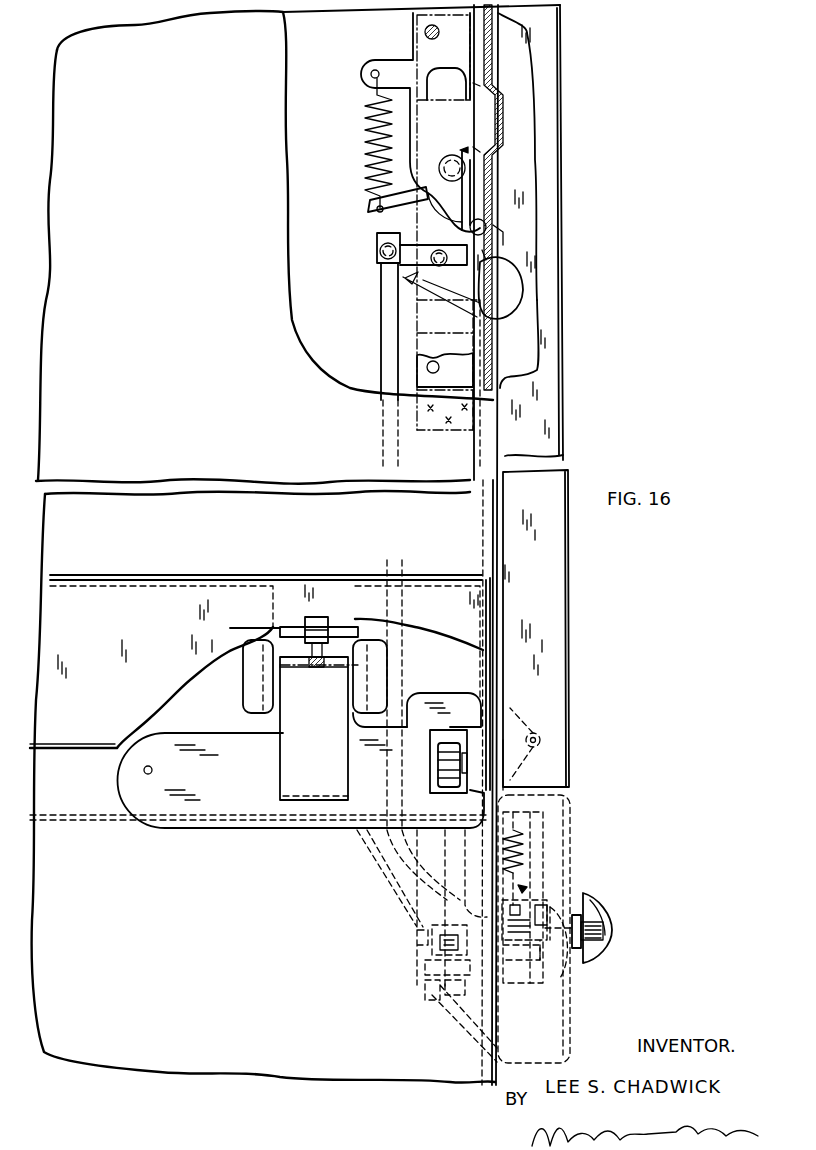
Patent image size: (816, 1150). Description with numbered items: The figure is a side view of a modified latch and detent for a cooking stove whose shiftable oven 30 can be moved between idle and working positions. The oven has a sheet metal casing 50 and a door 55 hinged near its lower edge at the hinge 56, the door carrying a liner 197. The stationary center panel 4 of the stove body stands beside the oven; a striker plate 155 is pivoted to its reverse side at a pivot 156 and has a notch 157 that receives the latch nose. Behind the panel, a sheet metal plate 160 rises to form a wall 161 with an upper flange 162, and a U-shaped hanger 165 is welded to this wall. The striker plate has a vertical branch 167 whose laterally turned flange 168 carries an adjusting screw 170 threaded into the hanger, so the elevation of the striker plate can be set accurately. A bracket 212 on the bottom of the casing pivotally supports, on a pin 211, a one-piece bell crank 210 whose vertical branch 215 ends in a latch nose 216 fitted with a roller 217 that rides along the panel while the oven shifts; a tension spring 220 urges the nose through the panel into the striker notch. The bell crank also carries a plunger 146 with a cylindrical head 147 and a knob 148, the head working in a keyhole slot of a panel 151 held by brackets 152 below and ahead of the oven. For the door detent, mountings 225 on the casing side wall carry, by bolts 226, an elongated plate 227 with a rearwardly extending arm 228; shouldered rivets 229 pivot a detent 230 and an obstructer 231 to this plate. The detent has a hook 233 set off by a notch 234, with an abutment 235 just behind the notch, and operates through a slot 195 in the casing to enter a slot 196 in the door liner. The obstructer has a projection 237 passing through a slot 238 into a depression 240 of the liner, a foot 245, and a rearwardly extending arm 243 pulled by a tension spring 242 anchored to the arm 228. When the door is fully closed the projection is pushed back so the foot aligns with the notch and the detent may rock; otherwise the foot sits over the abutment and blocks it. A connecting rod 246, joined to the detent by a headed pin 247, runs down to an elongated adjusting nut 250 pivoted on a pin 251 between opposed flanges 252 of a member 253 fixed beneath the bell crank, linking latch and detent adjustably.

The intermediate or center panel 4 is at (283, 590).
The shiftable oven 30 is at (170, 240).
The oven casing 50 is at (500, 387).
The oven door 55 is at (547, 343).
The hinge connection 56 is at (543, 737).
The plunger 146 is at (550, 923).
The cylindrical head 147 is at (573, 977).
The knob 148 is at (598, 930).
The sheet metal panel 151 is at (562, 1002).
The brackets 152 is at (387, 880).
The striker plate 155 is at (240, 803).
The pivot hole 156 is at (147, 772).
The notch 157 is at (437, 768).
The sheet metal plate 160 is at (100, 745).
The wall 161 is at (120, 651).
The flange 162 is at (124, 587).
The U-shaped hanger 165 is at (328, 752).
The vertical branch 167 is at (247, 695).
The flange 168 is at (340, 623).
The adjusting screw 170 is at (317, 617).
The slot 195 is at (477, 323).
The slot 196 is at (500, 320).
The door liner 197 is at (500, 44).
The bell crank 210 is at (522, 893).
The pin 211 is at (403, 933).
The bracket 212 is at (540, 823).
The vertical branch 215 is at (500, 745).
The latch nose 216 is at (457, 727).
The roller 217 is at (450, 778).
The tension spring 220 is at (523, 847).
The mountings 225 is at (418, 9).
The bolts 226 is at (439, 34).
The elongated plate 227 is at (473, 229).
The rearwardly extending arm 228 is at (372, 76).
The shouldered rivets 229 is at (438, 167).
The detent 230 is at (393, 290).
The obstructer 231 is at (468, 151).
The hook 233 is at (513, 288).
The notch 234 is at (480, 263).
The abutment 235 is at (470, 215).
The projection 237 is at (503, 110).
The slot 238 is at (490, 133).
The depression 240 is at (503, 90).
The tension spring 242 is at (368, 153).
The rearwardly extending arm 243 is at (372, 212).
The foot 245 is at (500, 232).
The connecting rod 246 is at (392, 353).
The headed pin 247 is at (378, 258).
The adjusting nut 250 is at (440, 1010).
The pin 251 is at (463, 1000).
The opposed flanges 252 is at (430, 990).
The member 253 is at (522, 979).